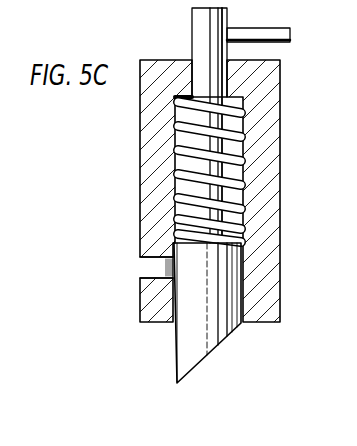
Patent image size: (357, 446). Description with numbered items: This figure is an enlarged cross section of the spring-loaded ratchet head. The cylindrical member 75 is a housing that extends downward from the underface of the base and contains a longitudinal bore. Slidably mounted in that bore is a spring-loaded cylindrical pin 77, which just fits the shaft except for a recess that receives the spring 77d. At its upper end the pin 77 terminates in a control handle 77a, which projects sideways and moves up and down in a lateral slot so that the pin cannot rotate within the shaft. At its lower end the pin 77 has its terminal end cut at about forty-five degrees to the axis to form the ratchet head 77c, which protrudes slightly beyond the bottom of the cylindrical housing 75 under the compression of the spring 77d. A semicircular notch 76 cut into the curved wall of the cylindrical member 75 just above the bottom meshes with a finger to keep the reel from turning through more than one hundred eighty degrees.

The cylindrical member 75 is at (152, 131).
The semicircular notch 76 is at (148, 270).
The spring-loaded cylindrical pin 77 is at (203, 33).
The control handle 77a is at (273, 28).
The ratchet head 77c is at (213, 347).
The spring 77d is at (174, 183).